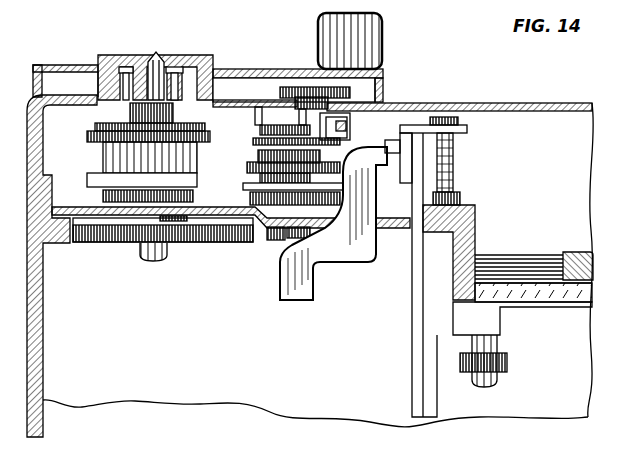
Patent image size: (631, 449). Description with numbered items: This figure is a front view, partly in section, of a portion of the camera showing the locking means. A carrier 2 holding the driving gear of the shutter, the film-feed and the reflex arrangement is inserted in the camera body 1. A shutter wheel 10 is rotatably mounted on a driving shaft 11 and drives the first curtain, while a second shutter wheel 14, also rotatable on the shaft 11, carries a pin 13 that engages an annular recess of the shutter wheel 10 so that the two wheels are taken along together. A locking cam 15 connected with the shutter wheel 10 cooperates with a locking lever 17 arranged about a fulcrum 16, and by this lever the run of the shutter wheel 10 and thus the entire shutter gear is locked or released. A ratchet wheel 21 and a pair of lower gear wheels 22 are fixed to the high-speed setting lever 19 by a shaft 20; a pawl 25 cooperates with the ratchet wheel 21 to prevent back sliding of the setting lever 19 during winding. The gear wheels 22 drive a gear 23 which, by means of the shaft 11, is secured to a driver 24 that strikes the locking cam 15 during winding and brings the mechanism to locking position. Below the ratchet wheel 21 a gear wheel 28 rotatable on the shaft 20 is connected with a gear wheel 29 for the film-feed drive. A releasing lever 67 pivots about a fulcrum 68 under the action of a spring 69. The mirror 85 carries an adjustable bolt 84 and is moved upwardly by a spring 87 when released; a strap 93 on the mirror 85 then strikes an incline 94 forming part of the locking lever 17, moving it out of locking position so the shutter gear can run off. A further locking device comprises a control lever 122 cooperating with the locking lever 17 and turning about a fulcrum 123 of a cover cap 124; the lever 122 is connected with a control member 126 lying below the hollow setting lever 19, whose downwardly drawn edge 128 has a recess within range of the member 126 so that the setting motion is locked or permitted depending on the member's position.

The camera body 1 is at (31, 378).
The carrier 2 is at (80, 243).
The shutter wheel 10 is at (305, 300).
The driving shaft 11 is at (298, 140).
The pin 13 is at (268, 206).
The shutter wheel 14 is at (285, 240).
The locking cam 15 is at (288, 88).
The fulcrum 16 is at (449, 137).
The locking lever 17 is at (413, 124).
The high-speed setting lever 19 is at (65, 82).
The shaft 20 is at (147, 97).
The ratchet wheel 21 is at (118, 122).
The lower gear wheels 22 is at (197, 243).
The gear 23 is at (263, 243).
The driver 24 is at (272, 128).
The pawl 25 is at (208, 214).
The gear wheel 28 is at (90, 133).
The gear wheel 29 is at (252, 140).
The releasing lever 67 is at (300, 240).
The fulcrum 68 is at (382, 262).
The spring 69 is at (366, 262).
The bolt 84 is at (485, 365).
The mirror 85 is at (538, 300).
The spring 87 is at (575, 296).
The strap 93 is at (463, 312).
The incline 94 is at (420, 362).
The control lever 122 is at (366, 103).
The fulcrum 123 is at (379, 90).
The cover cap 124 is at (205, 64).
The control member 126 is at (313, 87).
The downwardly drawn edge 128 is at (37, 67).